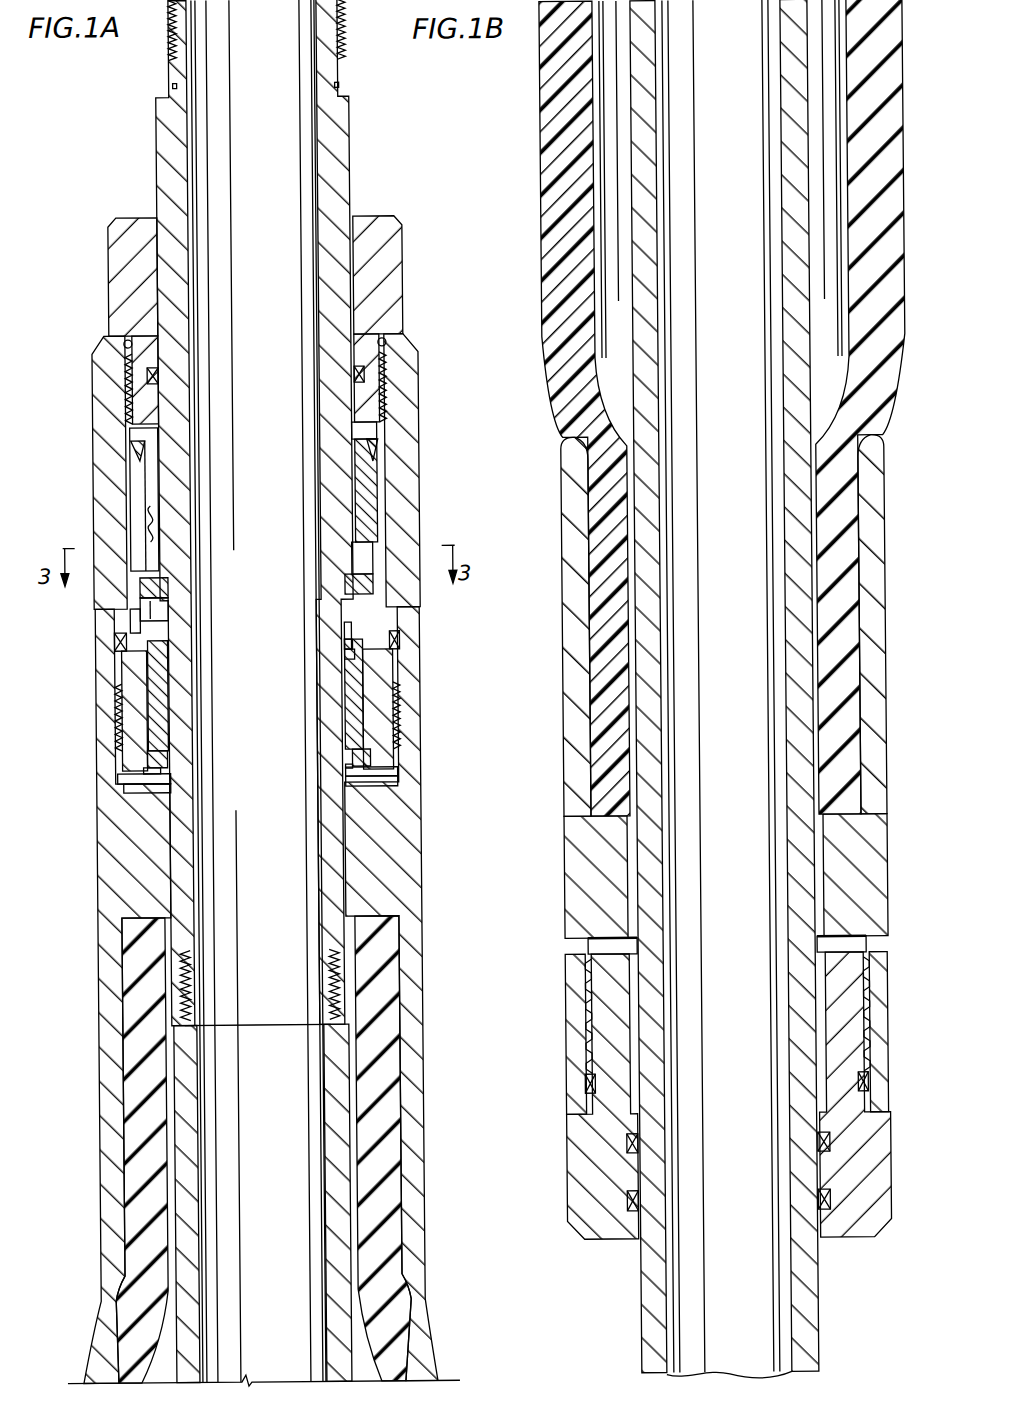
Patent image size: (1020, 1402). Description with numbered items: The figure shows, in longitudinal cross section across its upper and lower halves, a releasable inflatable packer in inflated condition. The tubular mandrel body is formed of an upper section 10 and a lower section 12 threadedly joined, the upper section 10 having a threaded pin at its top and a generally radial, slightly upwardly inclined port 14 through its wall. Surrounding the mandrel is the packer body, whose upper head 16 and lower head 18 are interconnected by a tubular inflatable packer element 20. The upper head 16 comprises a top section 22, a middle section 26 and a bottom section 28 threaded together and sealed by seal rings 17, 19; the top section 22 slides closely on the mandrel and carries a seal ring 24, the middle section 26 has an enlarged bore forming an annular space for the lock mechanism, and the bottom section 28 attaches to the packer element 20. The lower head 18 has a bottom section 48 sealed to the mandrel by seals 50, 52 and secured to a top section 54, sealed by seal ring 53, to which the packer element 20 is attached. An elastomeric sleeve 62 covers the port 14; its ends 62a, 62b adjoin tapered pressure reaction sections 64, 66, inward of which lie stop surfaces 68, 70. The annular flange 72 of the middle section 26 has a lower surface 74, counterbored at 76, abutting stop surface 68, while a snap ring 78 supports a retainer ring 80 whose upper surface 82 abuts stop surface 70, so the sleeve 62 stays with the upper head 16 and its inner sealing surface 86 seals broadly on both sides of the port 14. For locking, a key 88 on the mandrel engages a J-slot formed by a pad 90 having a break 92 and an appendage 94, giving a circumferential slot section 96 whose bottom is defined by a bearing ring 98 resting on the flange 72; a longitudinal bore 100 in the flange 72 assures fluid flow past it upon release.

In FIG. 1A, the upper section 10 is at (345, 150).
In FIG. 1A, the lower section 12 is at (316, 1100).
In FIG. 1B, the lower section 12 is at (786, 148).
In FIG. 1A, the port 14 is at (317, 706).
In FIG. 1A, the upper head 16 is at (474, 471).
In FIG. 1A, the seal ring 17 is at (404, 337).
In FIG. 1B, the lower head 18 is at (539, 966).
In FIG. 1A, the seal ring 19 is at (125, 646).
In FIG. 1A, the inflatable packer element 20 is at (376, 1120).
In FIG. 1B, the inflatable packer element 20 is at (549, 109).
In FIG. 1A, the top section 22 is at (112, 266).
In FIG. 1A, the seal ring 24 is at (150, 374).
In FIG. 1A, the middle section 26 is at (102, 423).
In FIG. 1A, the bottom section 28 is at (118, 873).
In FIG. 1B, the bottom section 48 is at (870, 1181).
In FIG. 1B, the seal 50 is at (624, 1146).
In FIG. 1B, the seal 52 is at (624, 1206).
In FIG. 1B, the seal ring 53 is at (583, 1084).
In FIG. 1B, the top section 54 is at (876, 525).
In FIG. 1A, the sleeve 62 is at (356, 705).
In FIG. 1A, the end 62a is at (348, 636).
In FIG. 1A, the end 62b is at (345, 769).
In FIG. 1A, the pressure reaction section 64 is at (166, 633).
In FIG. 1A, the pressure reaction section 66 is at (160, 763).
In FIG. 1A, the stop surface 68 is at (124, 690).
In FIG. 1A, the stop surface 70 is at (150, 769).
In FIG. 1A, the annular flange 72 is at (166, 607).
In FIG. 1A, the lower surface 74 is at (345, 656).
In FIG. 1A, the counterbore 76 is at (345, 645).
In FIG. 1A, the snap ring 78 is at (392, 777).
In FIG. 1A, the retainer ring 80 is at (149, 790).
In FIG. 1A, the upper surface 82 is at (368, 757).
In FIG. 1A, the sealing surface 86 is at (175, 683).
In FIG. 1A, the key 88 is at (378, 552).
In FIG. 1A, the pad 90 is at (377, 470).
In FIG. 1A, the break 92 is at (140, 486).
In FIG. 1A, the appendage 94 is at (154, 512).
In FIG. 1A, the slot section 96 is at (353, 556).
In FIG. 1A, the bearing ring 98 is at (379, 590).
In FIG. 1A, the longitudinal bore 100 is at (136, 620).